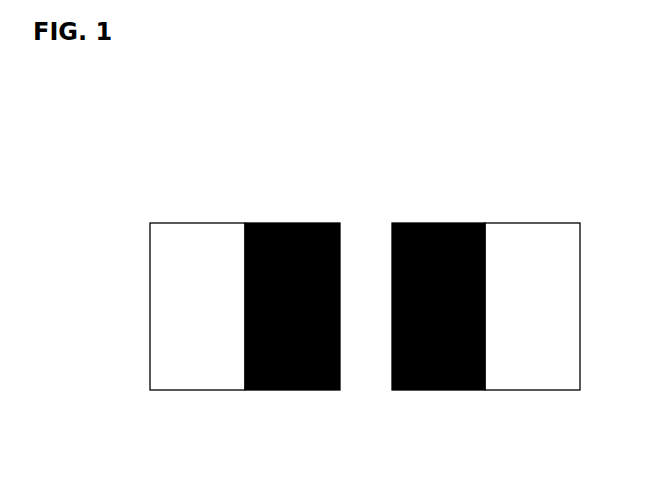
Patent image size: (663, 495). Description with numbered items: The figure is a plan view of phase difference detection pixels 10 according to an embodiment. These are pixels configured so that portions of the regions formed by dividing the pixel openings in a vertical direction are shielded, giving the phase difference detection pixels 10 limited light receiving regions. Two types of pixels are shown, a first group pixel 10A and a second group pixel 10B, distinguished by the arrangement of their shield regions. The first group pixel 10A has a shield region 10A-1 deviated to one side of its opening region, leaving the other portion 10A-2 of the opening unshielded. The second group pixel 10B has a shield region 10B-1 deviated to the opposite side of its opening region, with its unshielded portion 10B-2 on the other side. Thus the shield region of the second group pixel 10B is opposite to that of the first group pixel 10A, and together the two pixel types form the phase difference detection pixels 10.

The phase difference detection pixels 10 is at (505, 132).
The first group pixel 10A is at (244, 222).
The second group pixel 10B is at (485, 222).
The shielded region of first group pixel 10A-1 is at (292, 389).
The open region of first group pixel 10A-2 is at (200, 383).
The shielded region of second group pixel 10B-1 is at (437, 389).
The open region of second group pixel 10B-2 is at (530, 383).